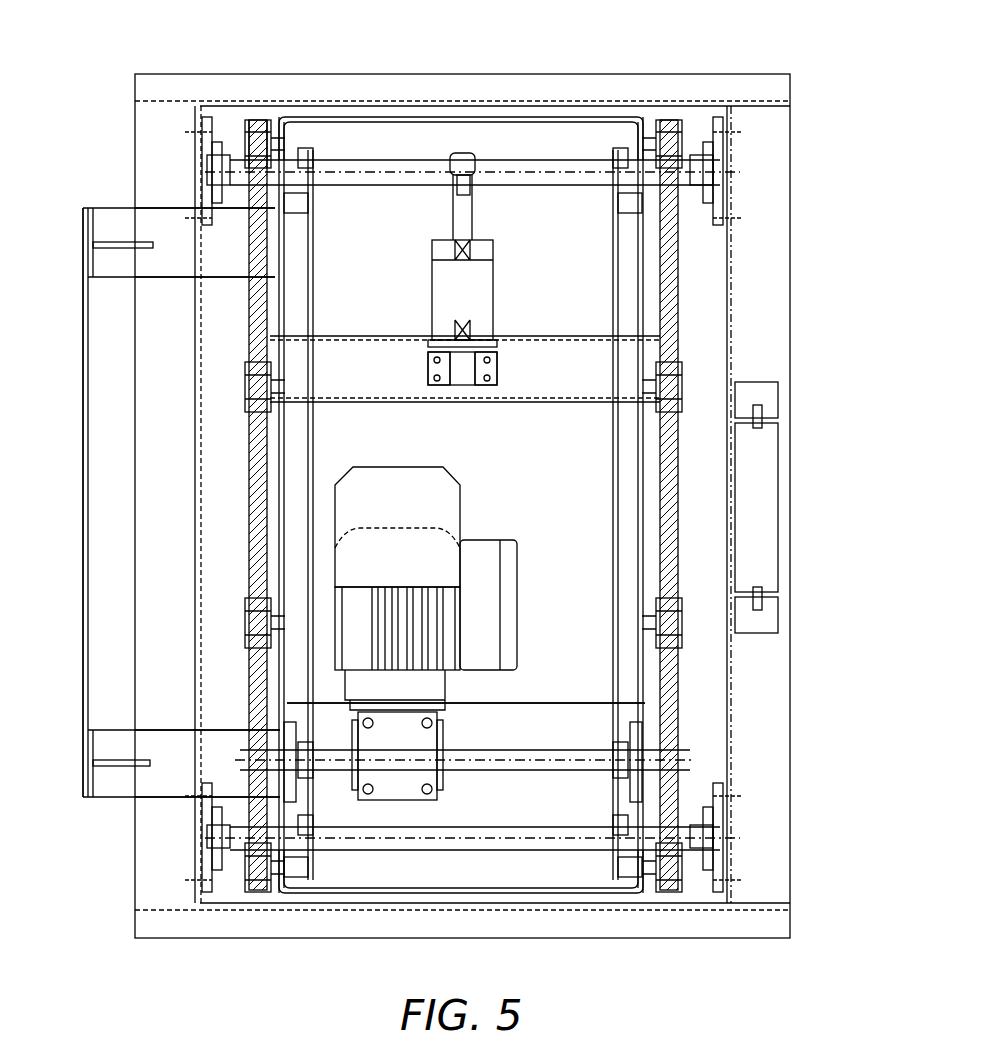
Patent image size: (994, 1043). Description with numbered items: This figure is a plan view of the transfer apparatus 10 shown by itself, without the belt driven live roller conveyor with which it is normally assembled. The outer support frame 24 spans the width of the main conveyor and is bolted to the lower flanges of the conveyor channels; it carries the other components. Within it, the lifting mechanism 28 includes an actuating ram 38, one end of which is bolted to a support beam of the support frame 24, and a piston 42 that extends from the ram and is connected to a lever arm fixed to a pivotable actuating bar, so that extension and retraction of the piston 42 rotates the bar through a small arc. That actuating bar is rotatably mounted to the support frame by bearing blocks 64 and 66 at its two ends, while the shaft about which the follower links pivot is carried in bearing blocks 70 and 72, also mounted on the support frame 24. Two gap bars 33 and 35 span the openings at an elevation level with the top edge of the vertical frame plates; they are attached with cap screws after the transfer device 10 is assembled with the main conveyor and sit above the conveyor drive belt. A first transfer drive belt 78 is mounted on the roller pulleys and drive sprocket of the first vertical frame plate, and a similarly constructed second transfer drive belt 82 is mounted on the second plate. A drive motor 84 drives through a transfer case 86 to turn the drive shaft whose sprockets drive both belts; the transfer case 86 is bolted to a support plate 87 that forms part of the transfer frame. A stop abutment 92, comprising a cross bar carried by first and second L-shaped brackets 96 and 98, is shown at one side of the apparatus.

The transfer apparatus 10 is at (707, 58).
The support frame 24 is at (770, 678).
The lifting mechanism 28 is at (478, 290).
The gap bar 33 is at (287, 548).
The gap bar 35 is at (640, 498).
The actuating ram 38 is at (462, 368).
The piston 42 is at (468, 214).
The bearing block 64 is at (217, 140).
The bearing block 66 is at (707, 153).
The bearing block 70 is at (205, 862).
The bearing block 72 is at (717, 870).
The first transfer drive belt 78 is at (248, 300).
The second transfer drive belt 82 is at (677, 245).
The drive motor 84 is at (440, 612).
The transfer case 86 is at (396, 795).
The support plate 87 is at (512, 713).
The stop abutment 92 is at (82, 458).
The L-shaped bracket 96 is at (118, 215).
The L-shaped bracket 98 is at (103, 787).